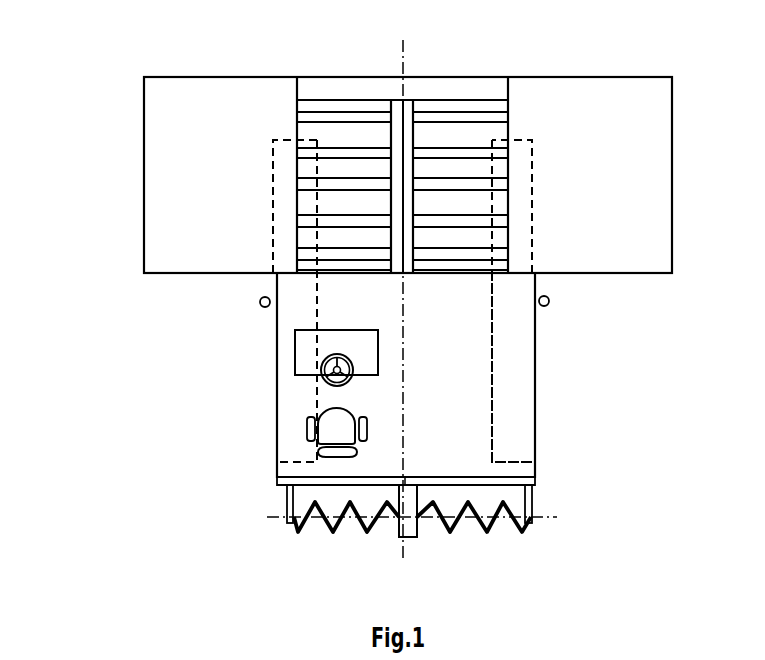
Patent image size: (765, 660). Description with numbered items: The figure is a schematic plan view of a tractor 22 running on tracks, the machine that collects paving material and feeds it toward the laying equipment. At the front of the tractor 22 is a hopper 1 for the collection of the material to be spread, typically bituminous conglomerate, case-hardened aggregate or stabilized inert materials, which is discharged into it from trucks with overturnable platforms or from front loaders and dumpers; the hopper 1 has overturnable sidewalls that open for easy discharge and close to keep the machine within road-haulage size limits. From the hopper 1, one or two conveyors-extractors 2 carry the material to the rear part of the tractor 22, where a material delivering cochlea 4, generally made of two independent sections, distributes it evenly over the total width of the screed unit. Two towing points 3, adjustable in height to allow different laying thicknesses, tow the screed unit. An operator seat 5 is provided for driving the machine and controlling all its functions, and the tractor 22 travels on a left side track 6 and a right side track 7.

The hopper 1 is at (234, 115).
The conveyors-extractors 2 is at (350, 110).
The towing points 3 is at (259, 305).
The material delivering cochlea 4 is at (412, 544).
The operator seat 5 is at (355, 337).
The left side track 6 is at (293, 398).
The right side track 7 is at (518, 405).
The tractor 22 is at (359, 304).